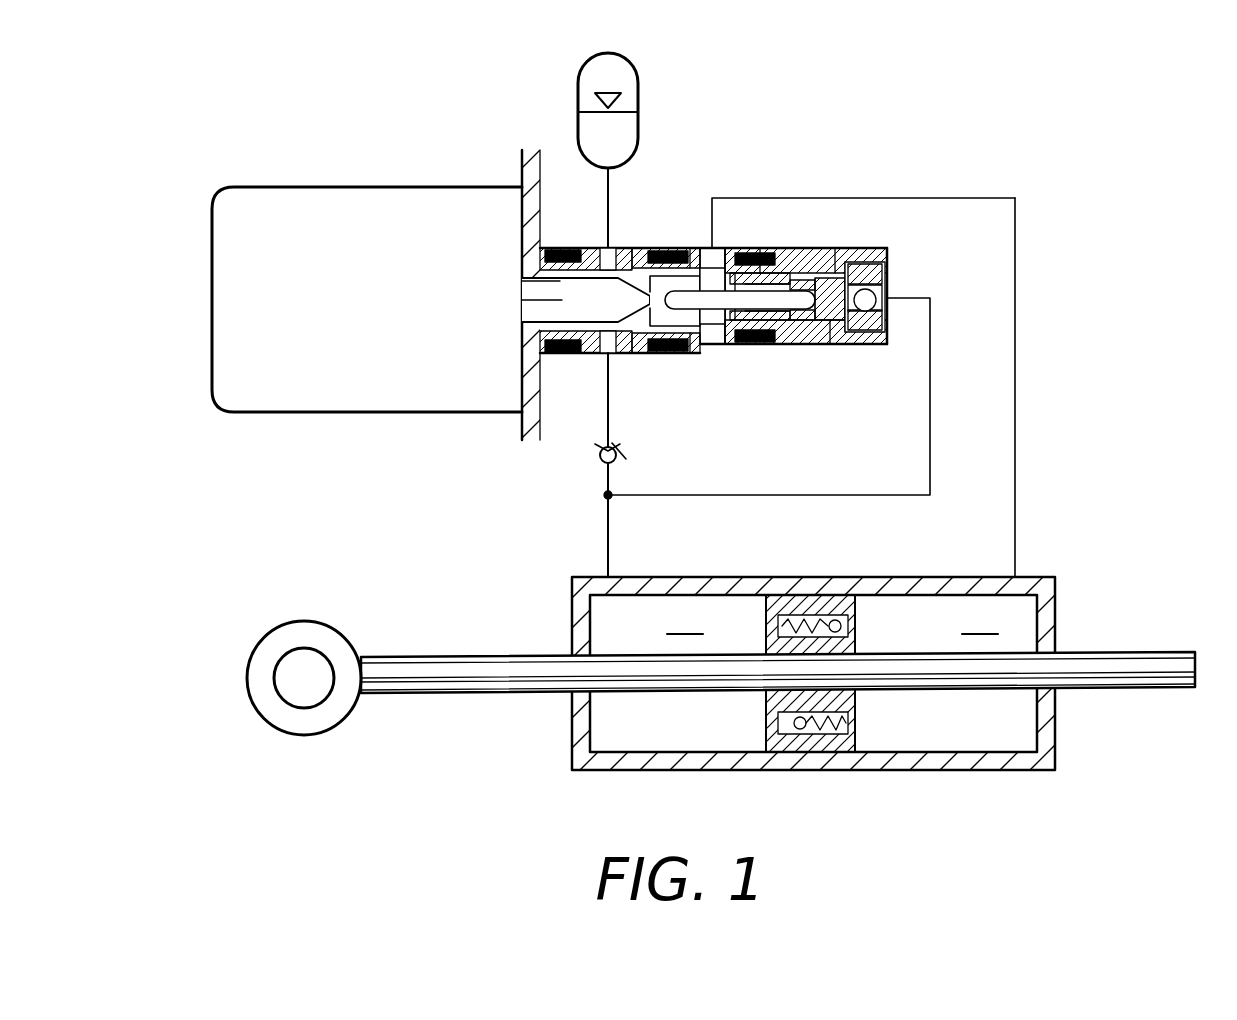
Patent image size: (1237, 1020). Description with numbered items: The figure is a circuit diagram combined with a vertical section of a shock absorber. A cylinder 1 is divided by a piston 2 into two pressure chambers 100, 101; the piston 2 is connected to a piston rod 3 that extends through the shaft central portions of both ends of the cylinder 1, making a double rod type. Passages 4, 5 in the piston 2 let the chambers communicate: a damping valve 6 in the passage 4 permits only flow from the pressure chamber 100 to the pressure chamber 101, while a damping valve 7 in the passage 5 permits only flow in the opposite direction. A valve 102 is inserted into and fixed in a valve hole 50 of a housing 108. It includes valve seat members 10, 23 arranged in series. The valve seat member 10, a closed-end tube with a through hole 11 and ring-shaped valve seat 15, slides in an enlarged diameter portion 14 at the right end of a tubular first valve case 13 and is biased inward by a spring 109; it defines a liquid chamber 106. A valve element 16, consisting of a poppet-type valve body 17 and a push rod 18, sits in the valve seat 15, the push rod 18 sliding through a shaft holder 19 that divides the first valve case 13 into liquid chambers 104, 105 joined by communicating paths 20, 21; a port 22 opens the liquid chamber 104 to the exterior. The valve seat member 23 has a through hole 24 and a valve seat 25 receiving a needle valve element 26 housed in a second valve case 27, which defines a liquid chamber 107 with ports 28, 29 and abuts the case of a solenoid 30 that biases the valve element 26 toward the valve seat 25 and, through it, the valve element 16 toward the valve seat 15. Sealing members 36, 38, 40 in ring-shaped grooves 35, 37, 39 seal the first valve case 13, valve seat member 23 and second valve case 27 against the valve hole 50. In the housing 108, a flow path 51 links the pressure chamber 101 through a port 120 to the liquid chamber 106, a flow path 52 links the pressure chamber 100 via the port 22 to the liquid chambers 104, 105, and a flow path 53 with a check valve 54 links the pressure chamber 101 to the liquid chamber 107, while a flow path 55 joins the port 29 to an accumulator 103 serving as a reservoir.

The cylinder 1 is at (1052, 577).
The piston 2 is at (868, 740).
The piston rod 3 is at (1128, 668).
The passage 4 is at (842, 625).
The passage 5 is at (778, 729).
The damping valve 6 is at (812, 597).
The damping valve 7 is at (810, 754).
The valve seat member 10 is at (889, 250).
The through hole 11 is at (868, 346).
The first valve case 13 is at (846, 266).
The enlarged diameter portion 14 is at (884, 262).
The valve seat 15 is at (830, 346).
The valve element 16 is at (836, 250).
The valve body 17 is at (858, 262).
The push rod 18 is at (692, 250).
The shaft holder 19 is at (756, 346).
The communicating path 20 is at (760, 250).
The communicating path 21 is at (794, 344).
The port 22 is at (735, 250).
The valve seat member 23 is at (706, 346).
The through hole 24 is at (658, 352).
The valve seat 25 is at (664, 250).
The valve element 26 is at (548, 300).
The second valve case 27 is at (556, 342).
The port 28 is at (596, 356).
The port 29 is at (600, 247).
The solenoid 30 is at (366, 184).
The ring-shaped groove 35 is at (766, 322).
The sealing member 36 is at (778, 254).
The ring-shaped groove 37 is at (688, 290).
The sealing member 38 is at (672, 340).
The ring-shaped groove 39 is at (556, 252).
The sealing member 40 is at (524, 240).
The valve hole 50 is at (884, 346).
The flow path 51 is at (930, 498).
The flow path 52 is at (1016, 410).
The flow path 53 is at (604, 495).
The check valve 54 is at (598, 457).
The flow path 55 is at (612, 200).
The pressure chamber 100 is at (979, 617).
The pressure chamber 101 is at (684, 617).
The valve 102 is at (962, 198).
The accumulator 103 is at (638, 74).
The liquid chamber 104 is at (740, 346).
The liquid chamber 105 is at (820, 280).
The liquid chamber 106 is at (874, 291).
The liquid chamber 107 is at (548, 280).
The housing 108 is at (540, 415).
The spring 109 is at (884, 330).
The port 120 is at (876, 305).